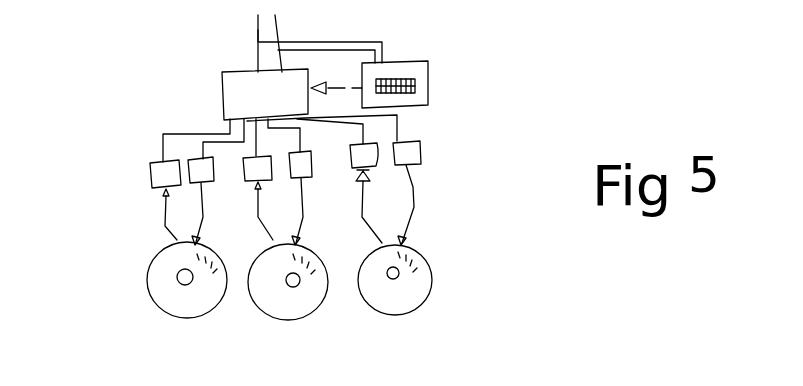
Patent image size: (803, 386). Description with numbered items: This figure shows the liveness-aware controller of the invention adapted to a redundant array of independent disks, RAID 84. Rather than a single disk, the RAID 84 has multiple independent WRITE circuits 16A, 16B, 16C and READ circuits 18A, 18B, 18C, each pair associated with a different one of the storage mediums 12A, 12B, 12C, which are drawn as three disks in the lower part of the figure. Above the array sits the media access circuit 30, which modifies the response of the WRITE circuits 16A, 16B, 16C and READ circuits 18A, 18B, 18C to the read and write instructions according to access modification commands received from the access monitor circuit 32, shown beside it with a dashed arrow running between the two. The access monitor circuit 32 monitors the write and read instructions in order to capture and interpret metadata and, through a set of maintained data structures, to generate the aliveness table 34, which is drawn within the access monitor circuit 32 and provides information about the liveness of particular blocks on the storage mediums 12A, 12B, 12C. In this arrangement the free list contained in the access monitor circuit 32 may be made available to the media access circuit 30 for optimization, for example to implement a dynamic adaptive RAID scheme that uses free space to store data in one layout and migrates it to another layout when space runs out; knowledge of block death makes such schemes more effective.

The storage medium 12A is at (200, 306).
The storage medium 12B is at (300, 308).
The storage medium 12C is at (403, 305).
The WRITE circuit 16A is at (200, 166).
The WRITE circuit 16B is at (304, 158).
The WRITE circuit 16C is at (421, 153).
The READ circuit 18A is at (151, 180).
The READ circuit 18B is at (256, 186).
The READ circuit 18C is at (357, 170).
The media access circuit 30 is at (282, 106).
The access monitor circuit 32 is at (412, 62).
The aliveness table 34 is at (424, 82).
The RAID 84 is at (88, 249).